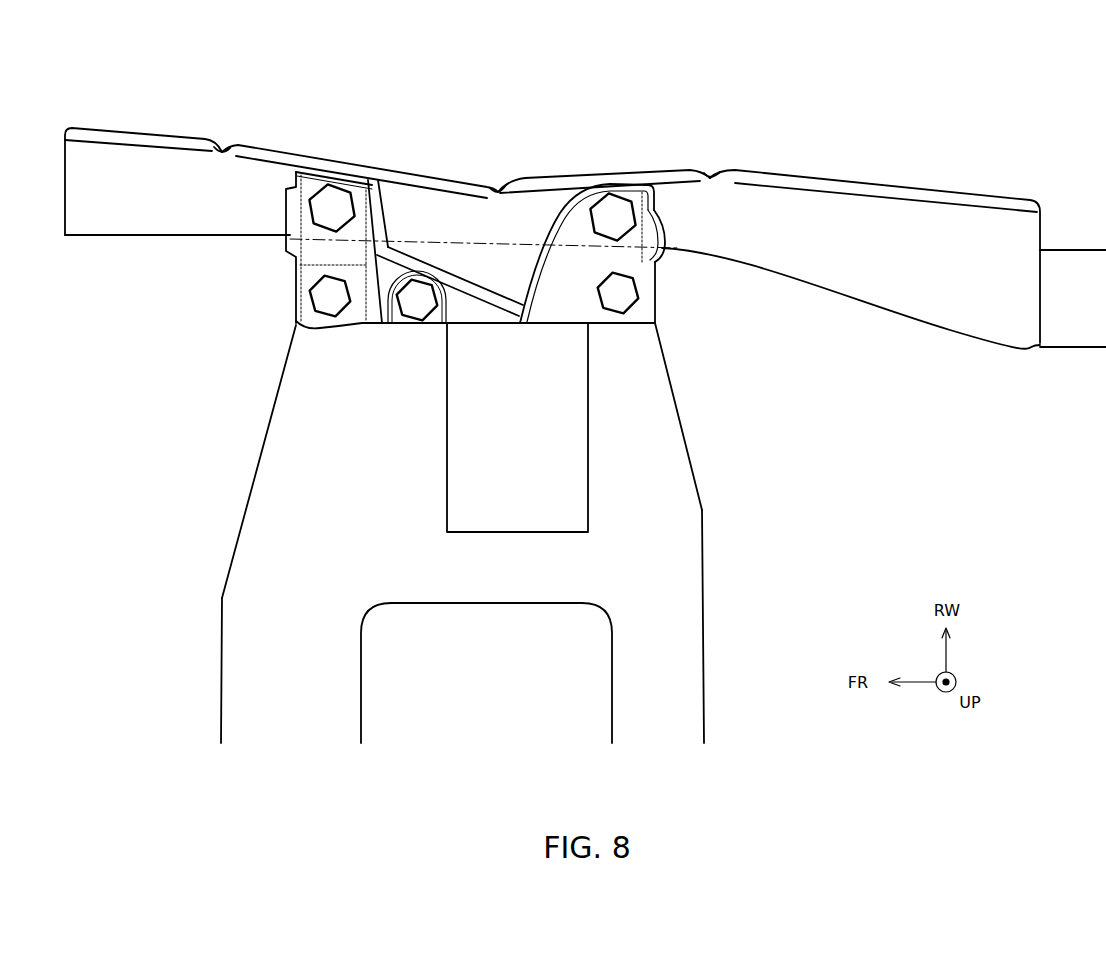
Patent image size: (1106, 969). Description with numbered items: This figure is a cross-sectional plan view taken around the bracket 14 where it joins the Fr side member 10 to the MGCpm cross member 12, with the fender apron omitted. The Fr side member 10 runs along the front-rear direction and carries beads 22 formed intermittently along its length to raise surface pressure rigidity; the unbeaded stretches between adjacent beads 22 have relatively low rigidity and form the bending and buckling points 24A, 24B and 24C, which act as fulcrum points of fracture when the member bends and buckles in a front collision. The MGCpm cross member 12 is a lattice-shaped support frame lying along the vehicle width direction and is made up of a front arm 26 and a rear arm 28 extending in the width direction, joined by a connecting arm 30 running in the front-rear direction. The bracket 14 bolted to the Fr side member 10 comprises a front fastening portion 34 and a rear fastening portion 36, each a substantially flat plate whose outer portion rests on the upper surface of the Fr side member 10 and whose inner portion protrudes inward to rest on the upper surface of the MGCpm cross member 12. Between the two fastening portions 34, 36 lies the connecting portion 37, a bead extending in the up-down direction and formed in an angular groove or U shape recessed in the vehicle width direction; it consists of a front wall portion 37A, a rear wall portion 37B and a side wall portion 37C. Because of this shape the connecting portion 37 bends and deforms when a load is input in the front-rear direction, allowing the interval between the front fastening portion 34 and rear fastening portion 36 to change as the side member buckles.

The Fr side member 10 is at (948, 335).
The MGCpm cross member 12 is at (218, 672).
The bracket 14 is at (660, 307).
The bead 22 is at (145, 128).
The bending and buckling point 24A is at (227, 142).
The bending and buckling point 24B is at (498, 183).
The bending and buckling point 24C is at (717, 168).
The front arm 26 is at (315, 427).
The rear arm 28 is at (645, 450).
The connecting arm 30 is at (510, 579).
The front fastening portion 34 is at (317, 253).
The rear fastening portion 36 is at (652, 265).
The connecting portion 37 is at (511, 181).
The front wall portion 37A is at (388, 213).
The rear wall portion 37B is at (567, 196).
The side wall portion 37C is at (450, 270).